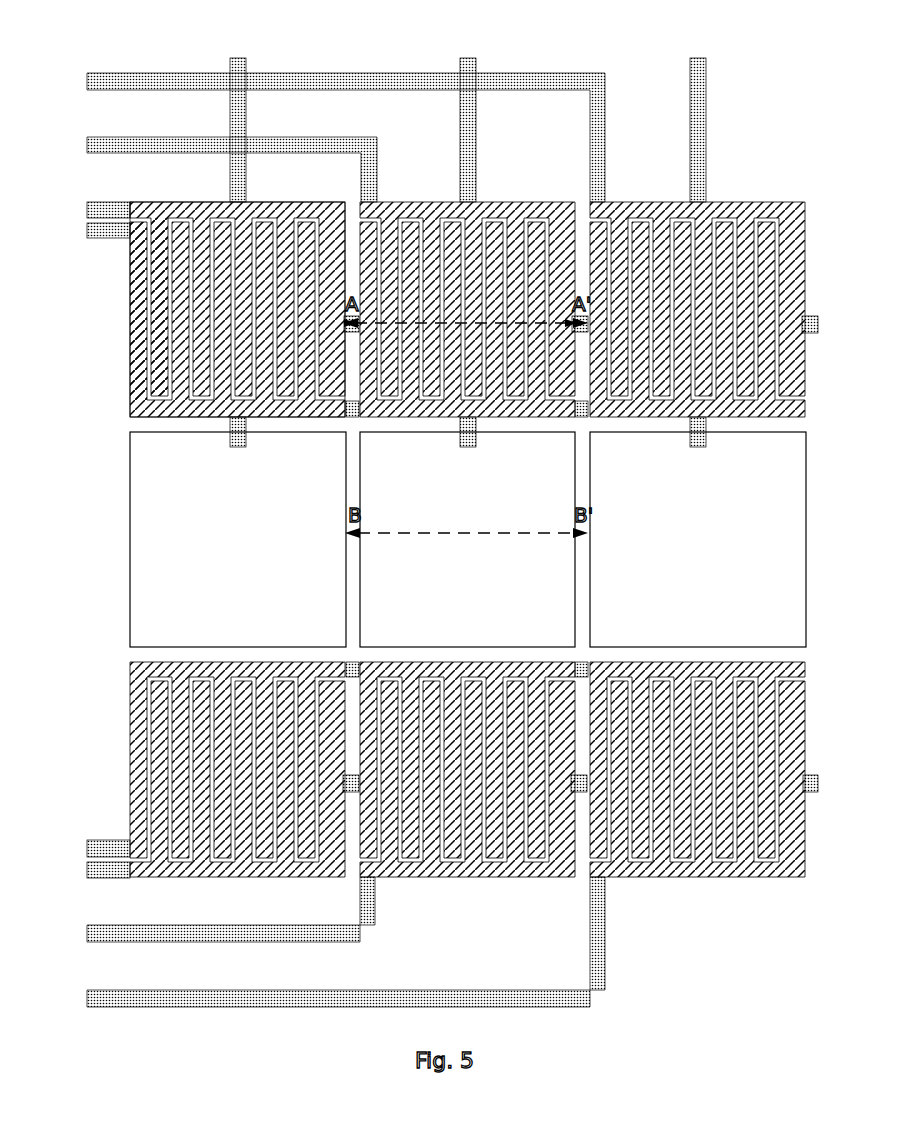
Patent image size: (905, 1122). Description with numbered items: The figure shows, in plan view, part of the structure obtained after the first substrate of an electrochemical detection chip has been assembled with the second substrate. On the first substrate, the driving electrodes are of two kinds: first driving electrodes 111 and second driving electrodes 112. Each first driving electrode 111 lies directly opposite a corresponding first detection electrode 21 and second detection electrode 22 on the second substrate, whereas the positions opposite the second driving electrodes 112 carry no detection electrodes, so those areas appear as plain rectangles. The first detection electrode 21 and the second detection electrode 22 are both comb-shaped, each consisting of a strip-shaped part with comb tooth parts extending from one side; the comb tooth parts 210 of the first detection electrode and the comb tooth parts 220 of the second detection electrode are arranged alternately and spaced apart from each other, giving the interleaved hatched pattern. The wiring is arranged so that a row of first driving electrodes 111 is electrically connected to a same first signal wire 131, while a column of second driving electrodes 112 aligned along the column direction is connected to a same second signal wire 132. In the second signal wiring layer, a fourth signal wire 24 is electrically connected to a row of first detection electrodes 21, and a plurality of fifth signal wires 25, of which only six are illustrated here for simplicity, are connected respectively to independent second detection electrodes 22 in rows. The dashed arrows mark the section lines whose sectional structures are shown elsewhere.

The first detection electrode 21 is at (431, 540).
The second detection electrode 22 is at (445, 518).
The comb tooth part of the first detection electrode 210 is at (137, 352).
The comb tooth part of the second detection electrode 220 is at (160, 333).
The fourth signal wire 24 is at (87, 230).
The fifth signal wire 25 is at (87, 81).
The first driving electrode 111 is at (152, 291).
The second driving electrode 112 is at (160, 528).
The first signal wire 131 is at (812, 323).
The second signal wire 132 is at (237, 67).